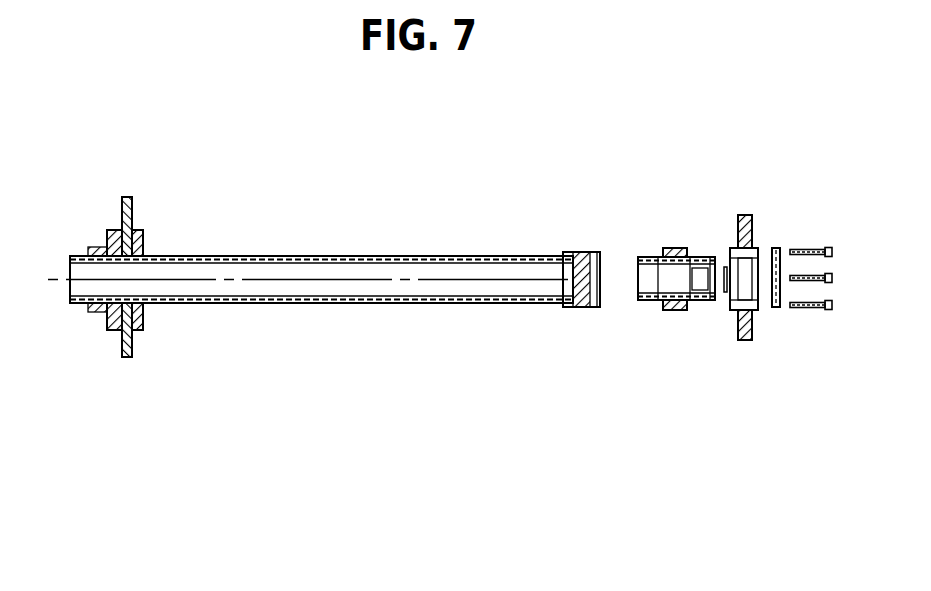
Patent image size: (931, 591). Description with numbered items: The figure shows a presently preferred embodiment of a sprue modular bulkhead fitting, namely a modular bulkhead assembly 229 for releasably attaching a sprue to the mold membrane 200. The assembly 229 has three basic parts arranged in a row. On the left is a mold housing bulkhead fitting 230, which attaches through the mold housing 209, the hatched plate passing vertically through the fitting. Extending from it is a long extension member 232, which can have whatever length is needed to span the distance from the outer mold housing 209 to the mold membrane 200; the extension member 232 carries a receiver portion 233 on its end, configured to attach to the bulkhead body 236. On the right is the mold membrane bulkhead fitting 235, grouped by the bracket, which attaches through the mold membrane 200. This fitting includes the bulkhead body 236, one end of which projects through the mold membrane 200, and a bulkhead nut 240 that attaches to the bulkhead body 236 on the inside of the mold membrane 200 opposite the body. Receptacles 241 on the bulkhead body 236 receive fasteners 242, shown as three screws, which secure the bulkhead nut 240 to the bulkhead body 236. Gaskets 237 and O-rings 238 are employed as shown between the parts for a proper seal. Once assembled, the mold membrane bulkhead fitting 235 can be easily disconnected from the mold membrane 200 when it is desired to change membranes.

The mold membrane 200 is at (750, 340).
The mold housing 209 is at (131, 199).
The modular bulkhead assembly 229 is at (321, 268).
The mold housing bulkhead fitting 230 is at (113, 326).
The extension member 232 is at (300, 303).
The receiver portion 233 is at (602, 304).
The mold membrane bulkhead fitting 235 is at (755, 345).
The bulkhead body 236 is at (685, 250).
The gaskets 237 is at (733, 262).
The O-rings 238 is at (724, 297).
The bulkhead nut 240 is at (776, 249).
The receptacles 241 is at (673, 309).
The fasteners 242 is at (840, 301).